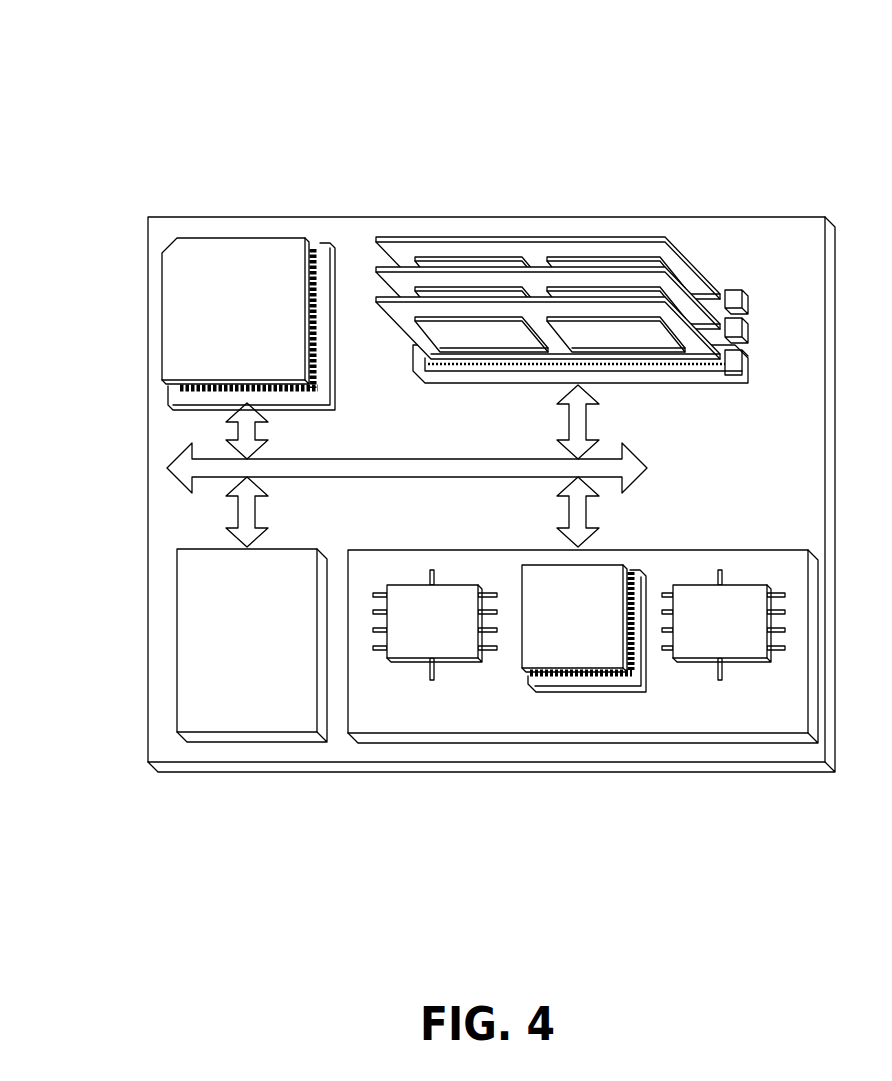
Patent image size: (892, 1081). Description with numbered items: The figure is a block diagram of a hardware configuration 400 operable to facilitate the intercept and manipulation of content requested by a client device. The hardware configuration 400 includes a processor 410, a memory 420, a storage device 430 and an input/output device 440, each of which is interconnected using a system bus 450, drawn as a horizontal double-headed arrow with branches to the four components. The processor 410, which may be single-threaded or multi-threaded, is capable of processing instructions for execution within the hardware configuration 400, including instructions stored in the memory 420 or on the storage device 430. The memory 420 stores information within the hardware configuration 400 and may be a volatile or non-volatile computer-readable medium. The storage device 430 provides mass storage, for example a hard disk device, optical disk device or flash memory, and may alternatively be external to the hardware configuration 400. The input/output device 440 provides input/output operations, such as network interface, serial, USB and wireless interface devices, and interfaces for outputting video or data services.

The hardware configuration 400 is at (91, 58).
The processor 410 is at (293, 371).
The memory 420 is at (711, 279).
The storage device 430 is at (305, 727).
The input/output device 440 is at (770, 550).
The system bus 450 is at (407, 477).